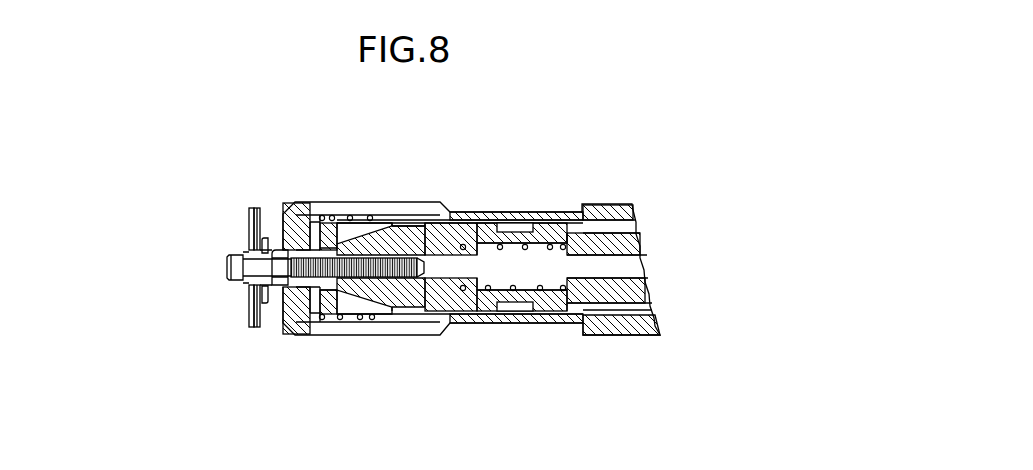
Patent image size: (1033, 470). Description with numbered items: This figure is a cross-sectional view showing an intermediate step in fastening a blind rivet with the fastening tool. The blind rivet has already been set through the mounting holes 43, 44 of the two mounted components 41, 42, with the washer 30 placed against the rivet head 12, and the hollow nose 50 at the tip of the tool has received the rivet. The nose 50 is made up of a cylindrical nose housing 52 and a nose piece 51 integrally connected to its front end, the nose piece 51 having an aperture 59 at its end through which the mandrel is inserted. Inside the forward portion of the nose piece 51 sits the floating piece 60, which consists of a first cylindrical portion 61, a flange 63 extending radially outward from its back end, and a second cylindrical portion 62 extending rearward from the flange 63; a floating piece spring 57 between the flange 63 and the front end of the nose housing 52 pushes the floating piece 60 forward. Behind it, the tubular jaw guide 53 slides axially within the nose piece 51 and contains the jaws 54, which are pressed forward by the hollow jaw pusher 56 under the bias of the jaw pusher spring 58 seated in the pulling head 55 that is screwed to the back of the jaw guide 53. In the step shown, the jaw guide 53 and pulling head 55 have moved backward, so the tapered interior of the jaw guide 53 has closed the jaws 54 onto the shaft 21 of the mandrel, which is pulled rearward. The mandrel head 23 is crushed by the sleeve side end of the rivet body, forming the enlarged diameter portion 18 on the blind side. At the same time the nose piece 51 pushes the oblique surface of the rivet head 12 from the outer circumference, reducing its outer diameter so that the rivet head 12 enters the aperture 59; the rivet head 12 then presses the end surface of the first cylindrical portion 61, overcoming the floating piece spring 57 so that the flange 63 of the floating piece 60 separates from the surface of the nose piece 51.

The rivet head 12 is at (278, 322).
The enlarged diameter portion 18 is at (249, 250).
The shaft 21 is at (390, 320).
The mandrel head 23 is at (227, 267).
The washer 30 is at (270, 250).
The mounted component 41 is at (249, 216).
The mounted component 42 is at (257, 210).
The mounting hole 43 is at (254, 282).
The mounting hole 44 is at (263, 303).
The nose 50 is at (500, 118).
The nose piece 51 is at (410, 212).
The nose housing 52 is at (478, 212).
The jaw guide 53 is at (339, 238).
The jaws 54 is at (356, 232).
The pulling head 55 is at (540, 212).
The jaw pusher 56 is at (458, 222).
The floating piece spring 57 is at (357, 320).
The jaw pusher spring 58 is at (507, 292).
The aperture 59 is at (296, 224).
The floating piece 60 is at (309, 222).
The first cylindrical portion 61 is at (312, 228).
The second cylindrical portion 62 is at (335, 320).
The flange 63 is at (303, 325).